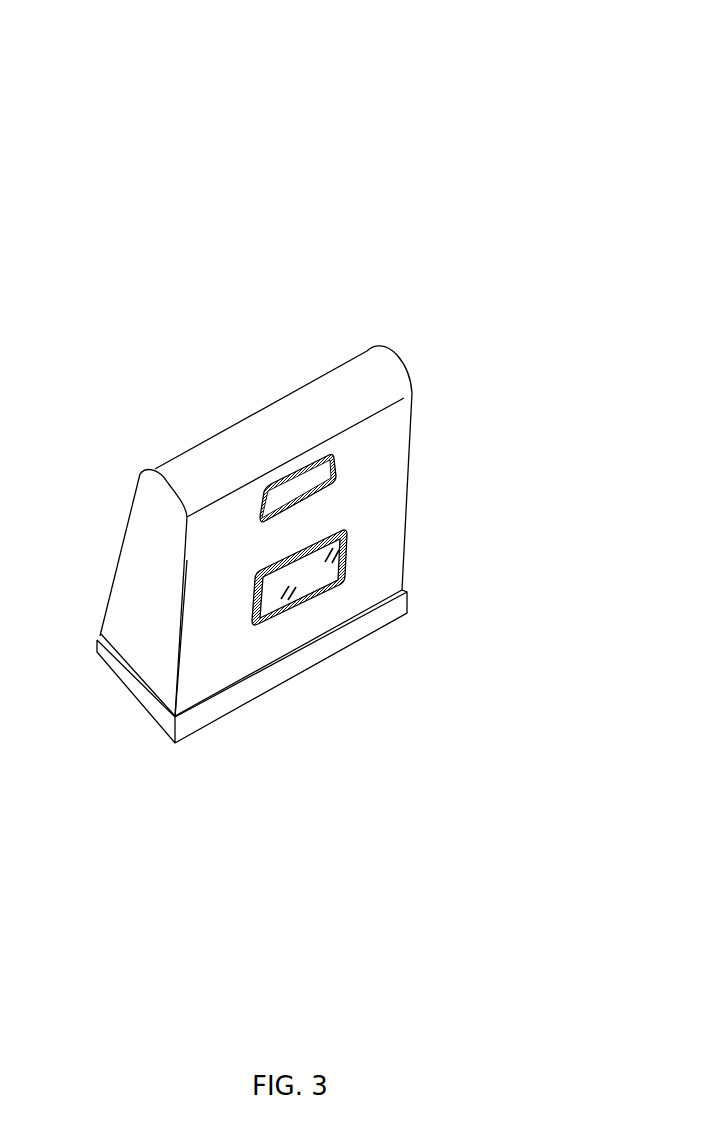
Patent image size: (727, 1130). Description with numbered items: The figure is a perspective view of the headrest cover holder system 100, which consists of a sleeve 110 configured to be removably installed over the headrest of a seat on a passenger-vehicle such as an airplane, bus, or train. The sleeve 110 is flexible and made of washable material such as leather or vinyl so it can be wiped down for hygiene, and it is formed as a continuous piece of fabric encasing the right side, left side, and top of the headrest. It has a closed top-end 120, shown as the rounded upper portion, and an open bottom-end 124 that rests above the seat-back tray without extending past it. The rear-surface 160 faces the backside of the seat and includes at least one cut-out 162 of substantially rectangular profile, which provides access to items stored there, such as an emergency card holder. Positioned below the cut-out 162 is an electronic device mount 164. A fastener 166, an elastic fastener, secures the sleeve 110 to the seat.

The headrest cover holder system 100 is at (537, 52).
The sleeve 110 is at (537, 94).
The closed top-end 120 is at (338, 407).
The open bottom-end 124 is at (396, 620).
The rear-surface 160 is at (195, 690).
The cut-out 162 is at (335, 472).
The electronic device mount 164 is at (316, 600).
The fastener 166 is at (112, 640).